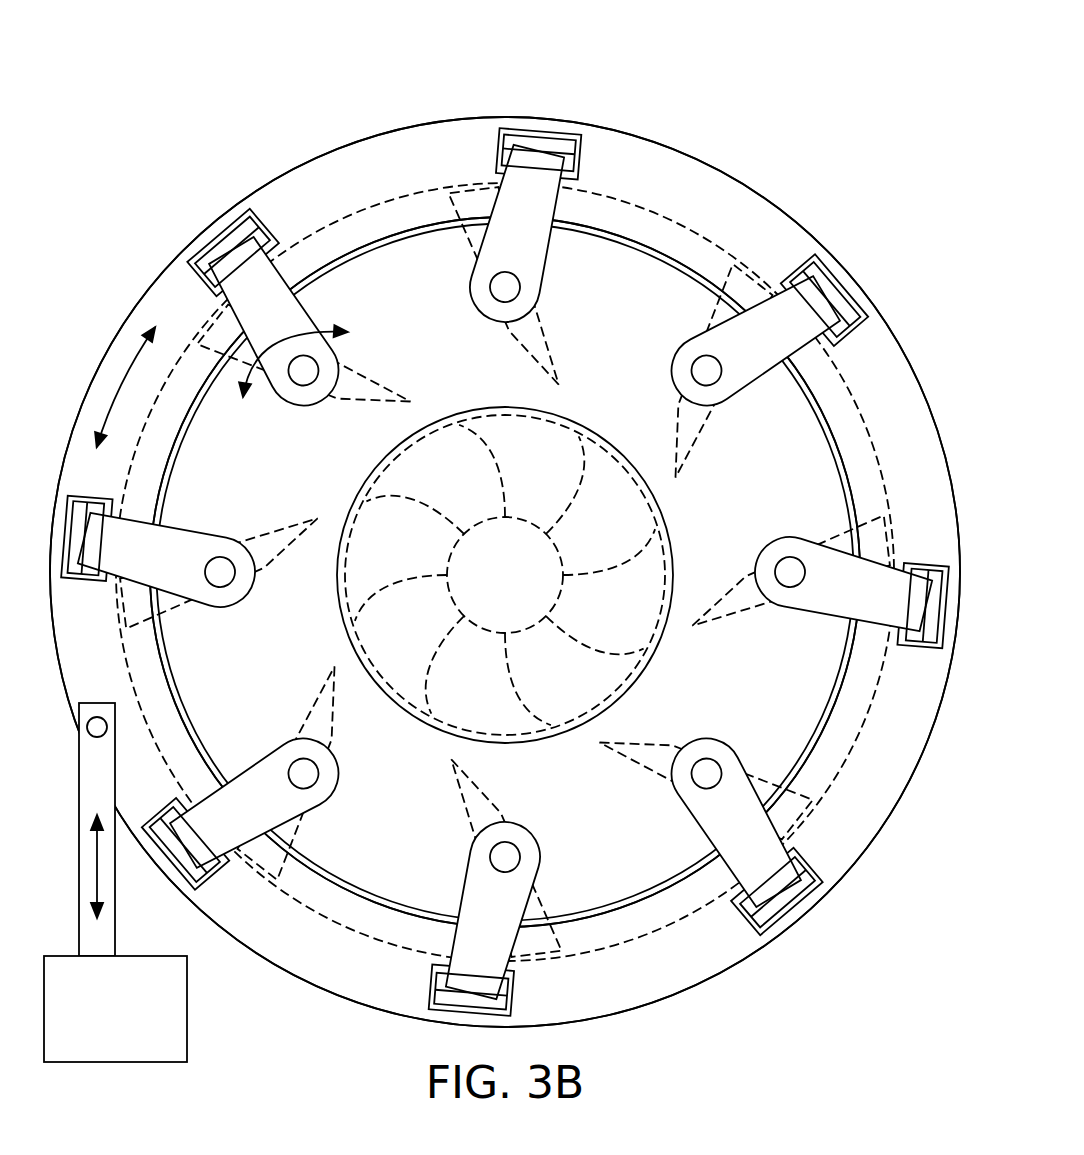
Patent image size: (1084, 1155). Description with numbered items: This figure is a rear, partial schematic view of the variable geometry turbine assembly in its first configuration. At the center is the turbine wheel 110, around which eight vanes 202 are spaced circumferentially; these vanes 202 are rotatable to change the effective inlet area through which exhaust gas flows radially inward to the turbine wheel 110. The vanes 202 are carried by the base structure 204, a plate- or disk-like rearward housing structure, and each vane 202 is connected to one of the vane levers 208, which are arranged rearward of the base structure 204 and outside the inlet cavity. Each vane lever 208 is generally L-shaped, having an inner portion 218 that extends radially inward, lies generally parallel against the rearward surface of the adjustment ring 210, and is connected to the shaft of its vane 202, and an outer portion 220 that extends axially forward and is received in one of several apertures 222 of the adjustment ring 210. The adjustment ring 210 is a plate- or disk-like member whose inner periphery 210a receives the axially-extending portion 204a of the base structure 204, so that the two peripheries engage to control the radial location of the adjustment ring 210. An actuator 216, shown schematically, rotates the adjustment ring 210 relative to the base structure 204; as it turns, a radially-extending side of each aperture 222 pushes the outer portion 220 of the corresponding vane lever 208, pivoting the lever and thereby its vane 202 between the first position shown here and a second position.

The turbine wheel 110 is at (489, 589).
The vanes 202 is at (453, 197).
The base structure 204 is at (383, 202).
The axially-extending portion of the base structure 204a is at (693, 863).
The vane levers 208 is at (553, 207).
The adjustment ring 210 is at (602, 128).
The inner periphery of the adjustment ring 210a is at (647, 895).
The actuator 216 is at (97, 1022).
The inner portion of the vane lever 218 is at (772, 378).
The outer portion of the vane lever 220 is at (853, 323).
The apertures 222 is at (838, 285).